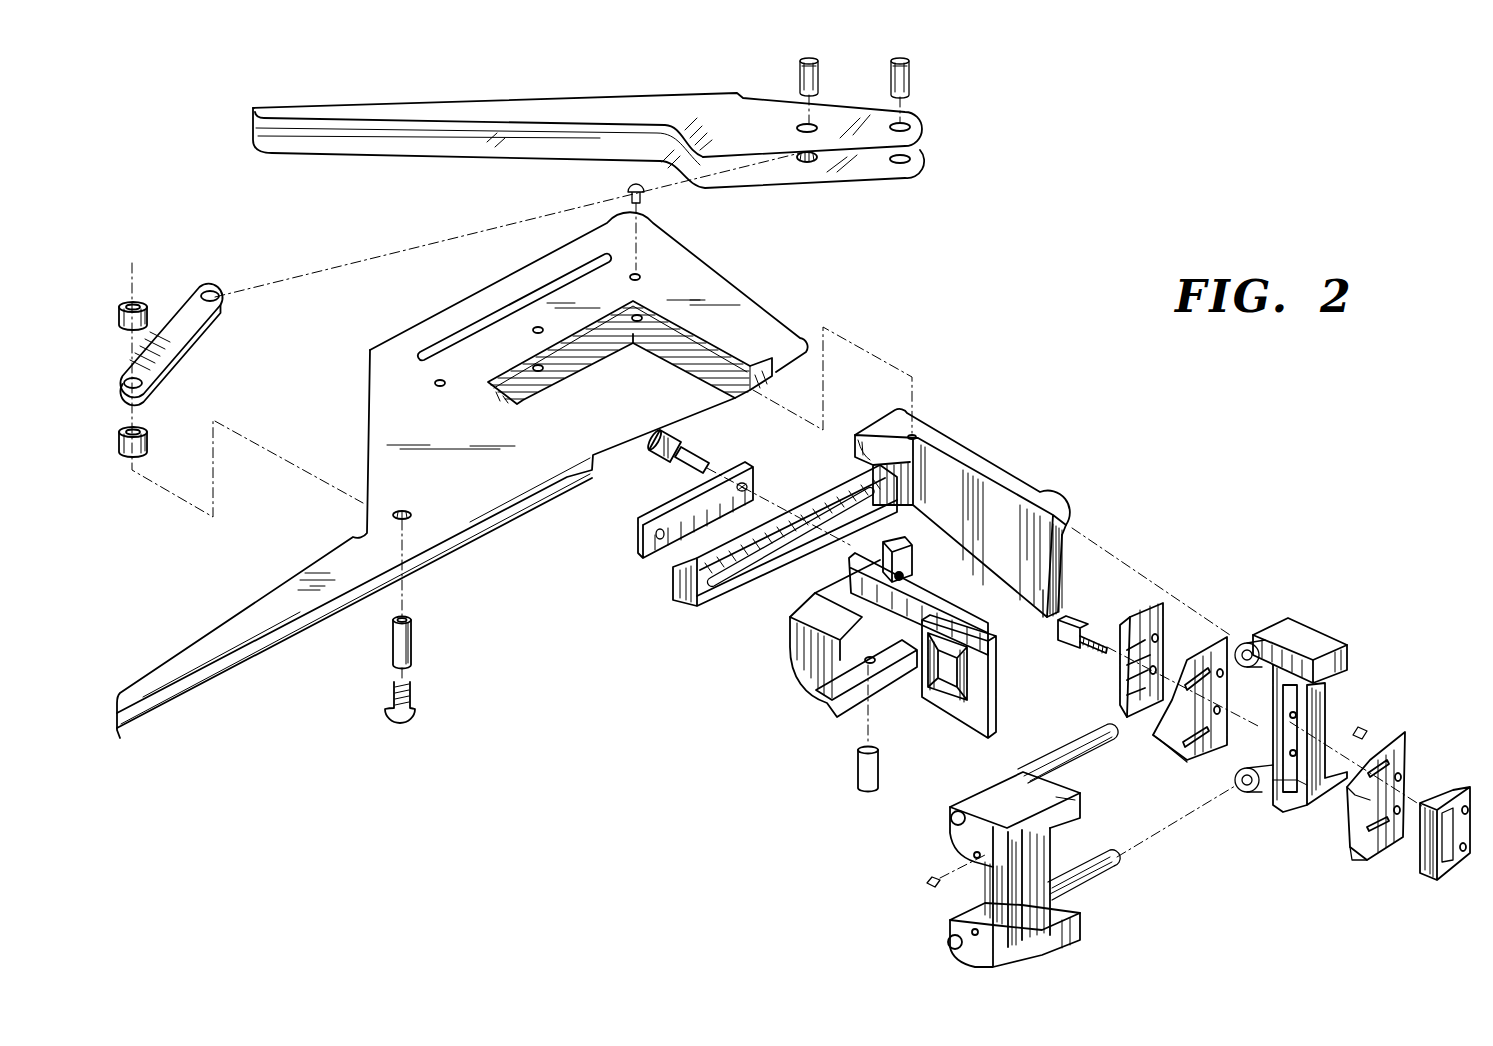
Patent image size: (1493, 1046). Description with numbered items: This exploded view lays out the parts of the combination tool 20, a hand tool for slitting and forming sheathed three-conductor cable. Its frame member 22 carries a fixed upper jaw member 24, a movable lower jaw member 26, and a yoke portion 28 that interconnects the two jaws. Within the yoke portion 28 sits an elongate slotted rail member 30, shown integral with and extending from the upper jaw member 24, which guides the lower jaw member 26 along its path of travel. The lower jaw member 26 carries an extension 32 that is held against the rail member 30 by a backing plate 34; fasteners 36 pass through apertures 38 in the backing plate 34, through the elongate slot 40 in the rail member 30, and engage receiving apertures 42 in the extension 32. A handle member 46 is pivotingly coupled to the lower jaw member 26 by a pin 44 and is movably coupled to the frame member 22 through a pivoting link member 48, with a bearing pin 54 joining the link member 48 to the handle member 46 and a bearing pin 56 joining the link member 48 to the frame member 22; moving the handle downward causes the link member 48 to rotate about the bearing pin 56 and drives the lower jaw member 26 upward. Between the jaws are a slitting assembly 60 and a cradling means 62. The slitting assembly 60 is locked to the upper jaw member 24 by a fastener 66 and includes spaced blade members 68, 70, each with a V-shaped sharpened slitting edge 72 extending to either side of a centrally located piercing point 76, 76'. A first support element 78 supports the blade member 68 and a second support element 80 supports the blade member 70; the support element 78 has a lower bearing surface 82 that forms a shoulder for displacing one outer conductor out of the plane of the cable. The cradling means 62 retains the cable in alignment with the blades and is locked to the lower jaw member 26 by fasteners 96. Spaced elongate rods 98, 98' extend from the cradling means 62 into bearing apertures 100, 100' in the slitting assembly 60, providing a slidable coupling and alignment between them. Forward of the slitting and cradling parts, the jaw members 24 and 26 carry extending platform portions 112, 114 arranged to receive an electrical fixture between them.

The combination tool 20 is at (721, 838).
The frame member 22 is at (356, 356).
The fixed upper jaw member 24 is at (1003, 513).
The movable lower jaw member 26 is at (792, 604).
The yoke portion 28 is at (433, 317).
The elongate slotted rail member 30 is at (802, 500).
The extension 32 is at (890, 550).
The backing plate 34 is at (670, 510).
The fasteners 36 is at (665, 432).
The apertures 38 is at (748, 490).
The elongate slot 40 is at (778, 532).
The receiving apertures 42 is at (900, 572).
The pin 44 is at (909, 78).
The handle member 46 is at (438, 147).
The pivoting link member 48 is at (186, 346).
The bearing pin 54 is at (813, 69).
The bearing pin 56 is at (412, 636).
The slitting assembly 60 is at (1362, 620).
The cradling means 62 is at (1085, 955).
The fastener 66 is at (1362, 727).
The blade member 68 is at (1387, 793).
The blade member 70 is at (1220, 643).
The V-shaped sharpened slitting edge 72 is at (1363, 853).
The piercing point 76 is at (1330, 815).
The piercing point 76' is at (1151, 743).
The first support element 78 is at (1472, 790).
The second support element 80 is at (1140, 612).
The lower bearing surface 82 is at (1422, 872).
The fasteners 96 is at (927, 883).
The elongate rod 98 is at (1068, 749).
The elongate rod 98' is at (1101, 875).
The bearing aperture 100 is at (1264, 631).
The bearing aperture 100' is at (1195, 811).
The extending platform portion 112 is at (1038, 592).
The extending platform portion 114 is at (990, 658).